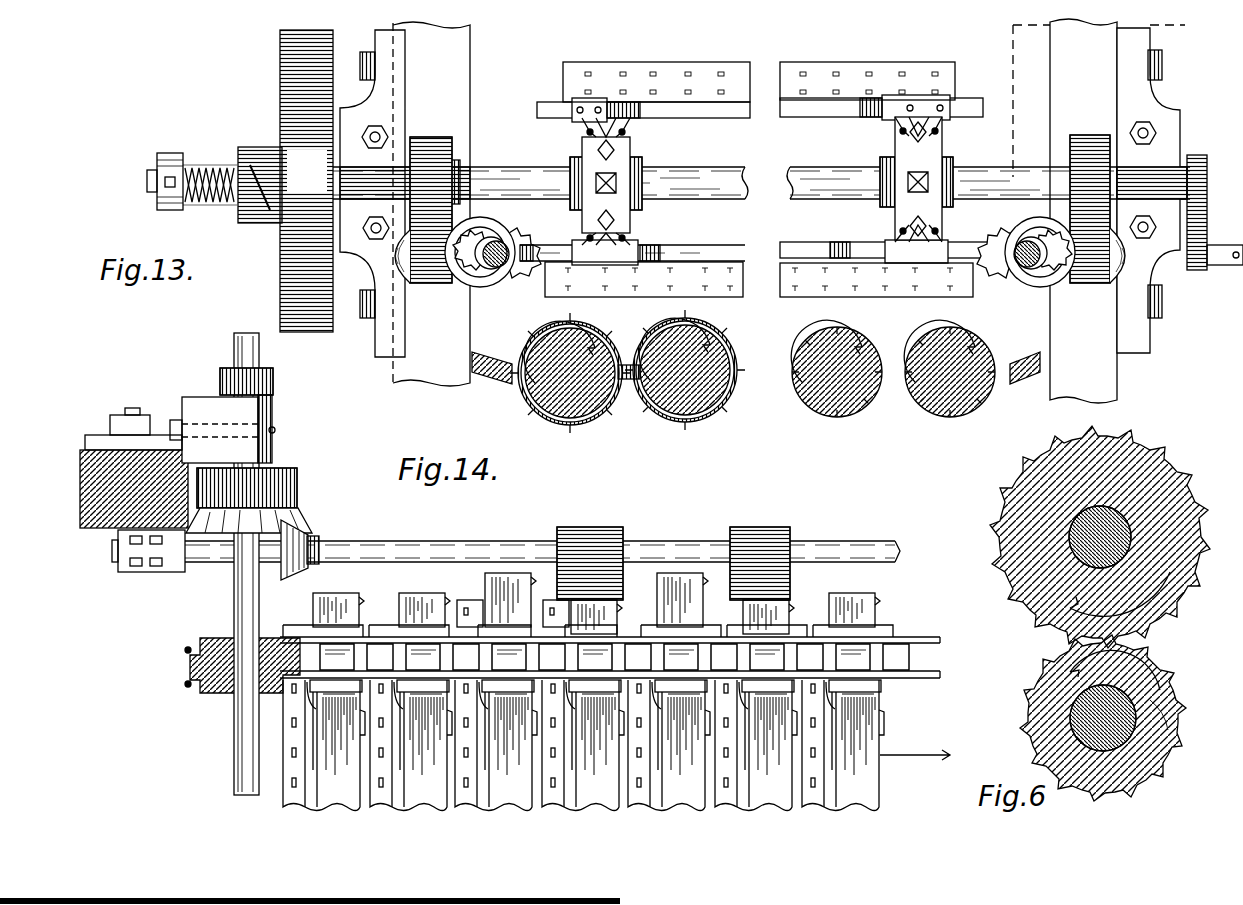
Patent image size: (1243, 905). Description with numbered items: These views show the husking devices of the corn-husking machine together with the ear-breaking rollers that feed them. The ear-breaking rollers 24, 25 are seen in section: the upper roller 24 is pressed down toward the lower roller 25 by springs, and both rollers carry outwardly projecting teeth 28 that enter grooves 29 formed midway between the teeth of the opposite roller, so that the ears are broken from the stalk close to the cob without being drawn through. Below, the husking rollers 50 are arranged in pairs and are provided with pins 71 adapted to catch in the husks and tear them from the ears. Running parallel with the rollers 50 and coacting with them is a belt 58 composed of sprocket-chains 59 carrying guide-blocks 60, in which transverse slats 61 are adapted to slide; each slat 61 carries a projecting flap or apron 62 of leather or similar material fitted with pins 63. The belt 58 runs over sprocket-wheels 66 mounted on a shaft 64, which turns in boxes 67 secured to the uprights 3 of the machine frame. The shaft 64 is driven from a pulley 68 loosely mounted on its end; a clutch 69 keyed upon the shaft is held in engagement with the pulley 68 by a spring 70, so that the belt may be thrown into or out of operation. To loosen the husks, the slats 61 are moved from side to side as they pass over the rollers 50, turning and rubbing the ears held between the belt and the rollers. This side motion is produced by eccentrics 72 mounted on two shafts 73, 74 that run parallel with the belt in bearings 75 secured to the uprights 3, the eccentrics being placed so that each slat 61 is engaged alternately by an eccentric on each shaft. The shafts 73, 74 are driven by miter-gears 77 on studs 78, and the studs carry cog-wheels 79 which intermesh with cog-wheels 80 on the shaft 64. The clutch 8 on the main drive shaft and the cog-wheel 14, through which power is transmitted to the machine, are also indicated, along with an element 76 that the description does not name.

In FIG. 13, the uprights 3 is at (760, 211).
In FIG. 14, the uprights 3 is at (88, 485).
In FIG. 13, the clutch 8 is at (1200, 232).
In FIG. 13, the cog-wheel 14 is at (788, 183).
In FIG. 6, the roller 24 is at (1168, 490).
In FIG. 6, the roller 25 is at (1162, 693).
In FIG. 6, the teeth 28 is at (1170, 696).
In FIG. 6, the grooves 29 is at (1187, 721).
In FIG. 13, the rollers 50 is at (590, 408).
In FIG. 14, the belt 58 is at (610, 622).
In FIG. 13, the sprocket-chains 59 is at (630, 128).
In FIG. 14, the sprocket-chains 59 is at (905, 633).
In FIG. 14, the guide-blocks 60 is at (318, 630).
In FIG. 13, the slats 61 is at (704, 250).
In FIG. 14, the slats 61 is at (745, 612).
In FIG. 13, the flaps or aprons 62 is at (675, 76).
In FIG. 13, the pins 63 is at (916, 288).
In FIG. 13, the shaft 64 is at (708, 177).
In FIG. 14, the shaft 64 is at (240, 738).
In FIG. 13, the sprocket-wheels 66 is at (640, 165).
In FIG. 14, the sprocket-wheels 66 is at (205, 682).
In FIG. 13, the boxes 67 is at (385, 168).
In FIG. 14, the boxes 67 is at (213, 408).
In FIG. 13, the pulley 68 is at (306, 181).
In FIG. 13, the clutch 69 is at (256, 225).
In FIG. 13, the spring 70 is at (198, 165).
In FIG. 13, the pins 71 is at (612, 335).
In FIG. 13, the eccentrics 72 is at (483, 288).
In FIG. 14, the eccentrics 72 is at (585, 527).
In FIG. 13, the shaft 73 is at (500, 266).
In FIG. 14, the shaft 73 is at (838, 543).
In FIG. 13, the shaft 74 is at (1028, 268).
In FIG. 14, the bearings 75 is at (148, 561).
In FIG. 13, the bevel gear 76 is at (524, 236).
In FIG. 14, the bevel gear 76 is at (310, 530).
In FIG. 13, the miter-gears 77 is at (472, 228).
In FIG. 14, the miter-gears 77 is at (215, 535).
In FIG. 13, the studs 78 is at (462, 284).
In FIG. 13, the cog-wheels 79 is at (433, 284).
In FIG. 13, the cog-wheels 80 is at (440, 140).
In FIG. 14, the cog-wheels 80 is at (298, 484).